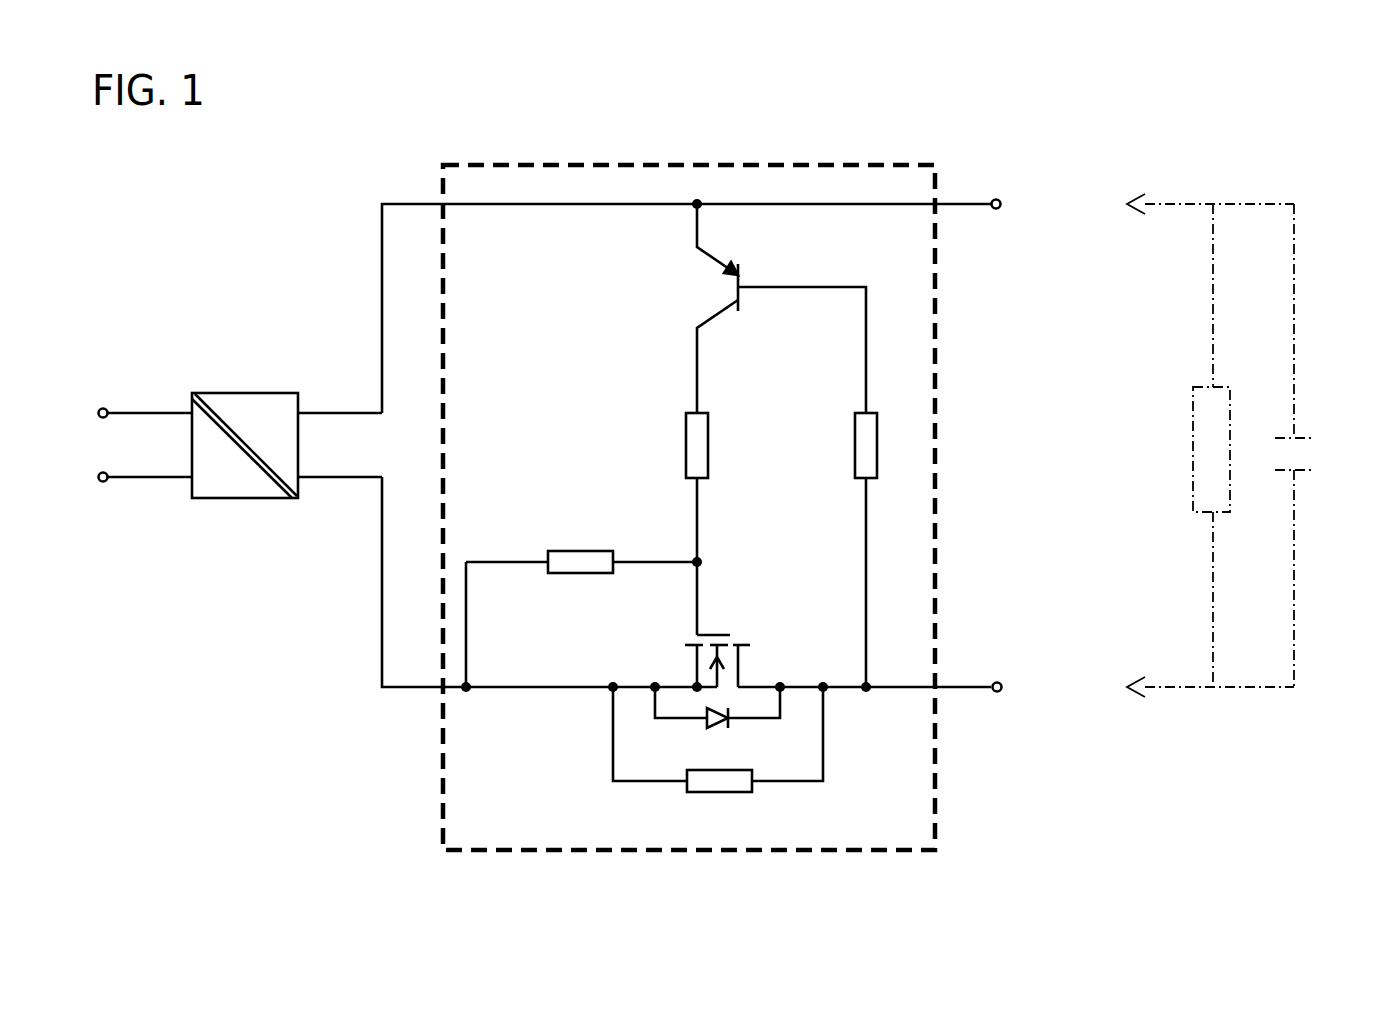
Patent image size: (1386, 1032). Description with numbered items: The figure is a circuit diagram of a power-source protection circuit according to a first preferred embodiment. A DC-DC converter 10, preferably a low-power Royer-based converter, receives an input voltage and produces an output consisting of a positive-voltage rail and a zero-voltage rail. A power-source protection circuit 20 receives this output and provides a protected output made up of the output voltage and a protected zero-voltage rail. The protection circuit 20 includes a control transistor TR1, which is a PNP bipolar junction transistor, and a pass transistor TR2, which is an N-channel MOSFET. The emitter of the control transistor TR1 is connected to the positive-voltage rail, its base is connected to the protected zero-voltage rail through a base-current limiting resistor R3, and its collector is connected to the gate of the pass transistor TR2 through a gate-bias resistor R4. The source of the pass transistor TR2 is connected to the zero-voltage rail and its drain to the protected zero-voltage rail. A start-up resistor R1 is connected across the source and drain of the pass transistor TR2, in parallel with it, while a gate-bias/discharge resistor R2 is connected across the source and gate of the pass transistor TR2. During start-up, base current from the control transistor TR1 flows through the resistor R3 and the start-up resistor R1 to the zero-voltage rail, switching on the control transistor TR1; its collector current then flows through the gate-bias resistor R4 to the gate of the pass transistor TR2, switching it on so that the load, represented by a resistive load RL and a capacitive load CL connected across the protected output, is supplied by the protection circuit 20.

The DC-DC converter 10 is at (229, 461).
The power-source protection circuit 20 is at (729, 534).
The control transistor TR1 is at (766, 308).
The pass transistor TR2 is at (688, 661).
The start-up resistor R1 is at (718, 763).
The gate-bias/discharge resistor R2 is at (581, 604).
The base-current limiting resistor R3 is at (843, 550).
The gate-bias resistor R4 is at (675, 524).
The resistive load RL is at (1195, 445).
The capacitive load CL is at (1314, 445).